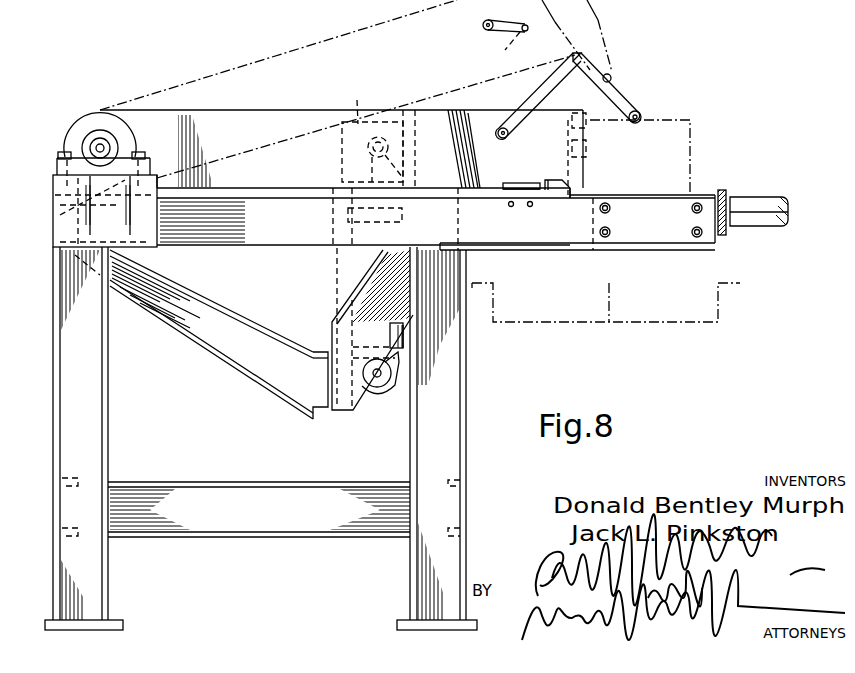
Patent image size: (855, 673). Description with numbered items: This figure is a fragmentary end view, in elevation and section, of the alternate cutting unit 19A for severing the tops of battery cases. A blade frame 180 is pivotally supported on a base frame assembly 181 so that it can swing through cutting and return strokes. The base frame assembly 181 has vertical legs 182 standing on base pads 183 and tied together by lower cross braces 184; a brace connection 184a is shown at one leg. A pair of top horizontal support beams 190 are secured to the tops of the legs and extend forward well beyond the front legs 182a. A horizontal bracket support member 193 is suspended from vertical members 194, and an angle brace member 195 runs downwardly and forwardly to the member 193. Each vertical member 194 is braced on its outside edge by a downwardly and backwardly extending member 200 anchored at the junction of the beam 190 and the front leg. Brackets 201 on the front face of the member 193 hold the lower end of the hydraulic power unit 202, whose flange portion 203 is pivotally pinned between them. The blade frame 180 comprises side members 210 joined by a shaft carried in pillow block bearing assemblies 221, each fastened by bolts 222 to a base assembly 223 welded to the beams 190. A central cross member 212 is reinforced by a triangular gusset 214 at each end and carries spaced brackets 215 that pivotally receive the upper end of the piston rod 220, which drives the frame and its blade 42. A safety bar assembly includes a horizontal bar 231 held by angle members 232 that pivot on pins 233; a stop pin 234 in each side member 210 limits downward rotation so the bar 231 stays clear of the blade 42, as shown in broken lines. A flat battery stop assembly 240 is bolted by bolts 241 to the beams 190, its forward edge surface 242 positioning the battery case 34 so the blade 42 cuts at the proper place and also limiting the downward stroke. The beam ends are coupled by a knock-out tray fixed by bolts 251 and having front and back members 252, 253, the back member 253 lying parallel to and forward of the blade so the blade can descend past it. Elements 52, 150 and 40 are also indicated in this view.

The cutting unit 19A is at (80, 45).
The blade frame 180 is at (248, 62).
The side members 210 is at (228, 117).
The pillow block bearing assemblies 221 is at (88, 122).
The bolts 222 is at (58, 155).
The base assembly 223 is at (52, 188).
The gusset 214 is at (342, 105).
The brackets 215 is at (368, 146).
The piston rod 220 is at (372, 178).
The central cross member 212 is at (417, 143).
The pin 233 is at (505, 130).
The stop pin 234 is at (499, 39).
The angle members 232 is at (590, 72).
The horizontal bar 231 is at (640, 112).
The battery case 34 is at (695, 127).
The bracket 52 is at (587, 129).
The blade 42 is at (576, 165).
The roller 150 is at (740, 196).
The top horizontal support beams 190 is at (252, 243).
The bolts 251 is at (688, 246).
The back member 253 is at (603, 221).
The front member 252 is at (714, 233).
The battery stop assembly 240 is at (520, 207).
The bolts 241 is at (512, 206).
The forward edge surface 242 is at (567, 203).
The bracket outline 40 is at (727, 307).
The vertical members 194 is at (338, 267).
The brace member 200 is at (382, 302).
The hydraulic power unit 202 is at (405, 339).
The flange portion 203 is at (397, 356).
The brackets 201 is at (363, 392).
The angle brace member 195 is at (175, 310).
The horizontal bracket support member 193 is at (322, 356).
The vertical legs 182 is at (108, 383).
The base frame assembly 181 is at (467, 450).
The lower cross braces 184 is at (215, 455).
The front legs 182a is at (410, 455).
The brace connection 184a is at (458, 483).
The base pads 183 is at (118, 620).